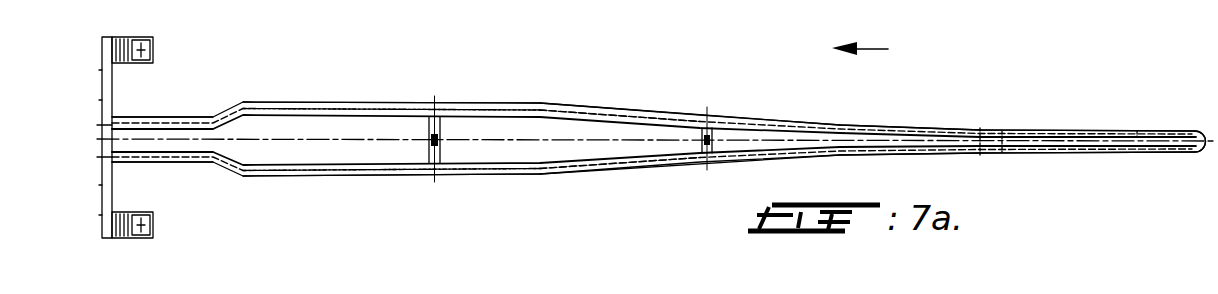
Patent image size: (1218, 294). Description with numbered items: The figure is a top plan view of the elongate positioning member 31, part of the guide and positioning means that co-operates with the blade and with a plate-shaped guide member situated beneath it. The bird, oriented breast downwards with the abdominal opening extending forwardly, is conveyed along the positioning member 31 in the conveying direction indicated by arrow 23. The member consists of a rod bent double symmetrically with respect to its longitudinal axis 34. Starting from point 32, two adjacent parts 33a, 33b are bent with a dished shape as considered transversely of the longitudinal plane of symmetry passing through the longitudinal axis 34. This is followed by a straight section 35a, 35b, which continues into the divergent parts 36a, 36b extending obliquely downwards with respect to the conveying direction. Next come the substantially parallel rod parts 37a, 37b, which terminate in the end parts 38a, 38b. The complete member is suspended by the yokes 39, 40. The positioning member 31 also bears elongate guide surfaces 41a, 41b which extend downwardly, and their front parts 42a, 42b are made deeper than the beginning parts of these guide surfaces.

The arrow indicating the conveying direction 23 is at (872, 44).
The elongate positioning member 31 is at (635, 90).
The starting point of the positioning member 32 is at (1205, 130).
The first dished part 33a is at (1060, 103).
The second dished part 33b is at (1048, 155).
The longitudinal axis 34 is at (480, 139).
The first straight section 35a is at (925, 130).
The second straight section 35b is at (940, 157).
The first divergent part 36a is at (760, 122).
The second divergent part 36b is at (738, 160).
The first parallel rod part 37a is at (345, 103).
The second parallel rod part 37b is at (308, 178).
The first end part 38a is at (185, 120).
The second end part 38b is at (182, 165).
The first yoke 39 is at (440, 150).
The second yoke 40 is at (704, 142).
The first elongate guide surface 41a is at (660, 118).
The second elongate guide surface 41b is at (640, 167).
The front part of the guide surface 42a is at (393, 100).
The front part of the guide surface 42b is at (392, 178).